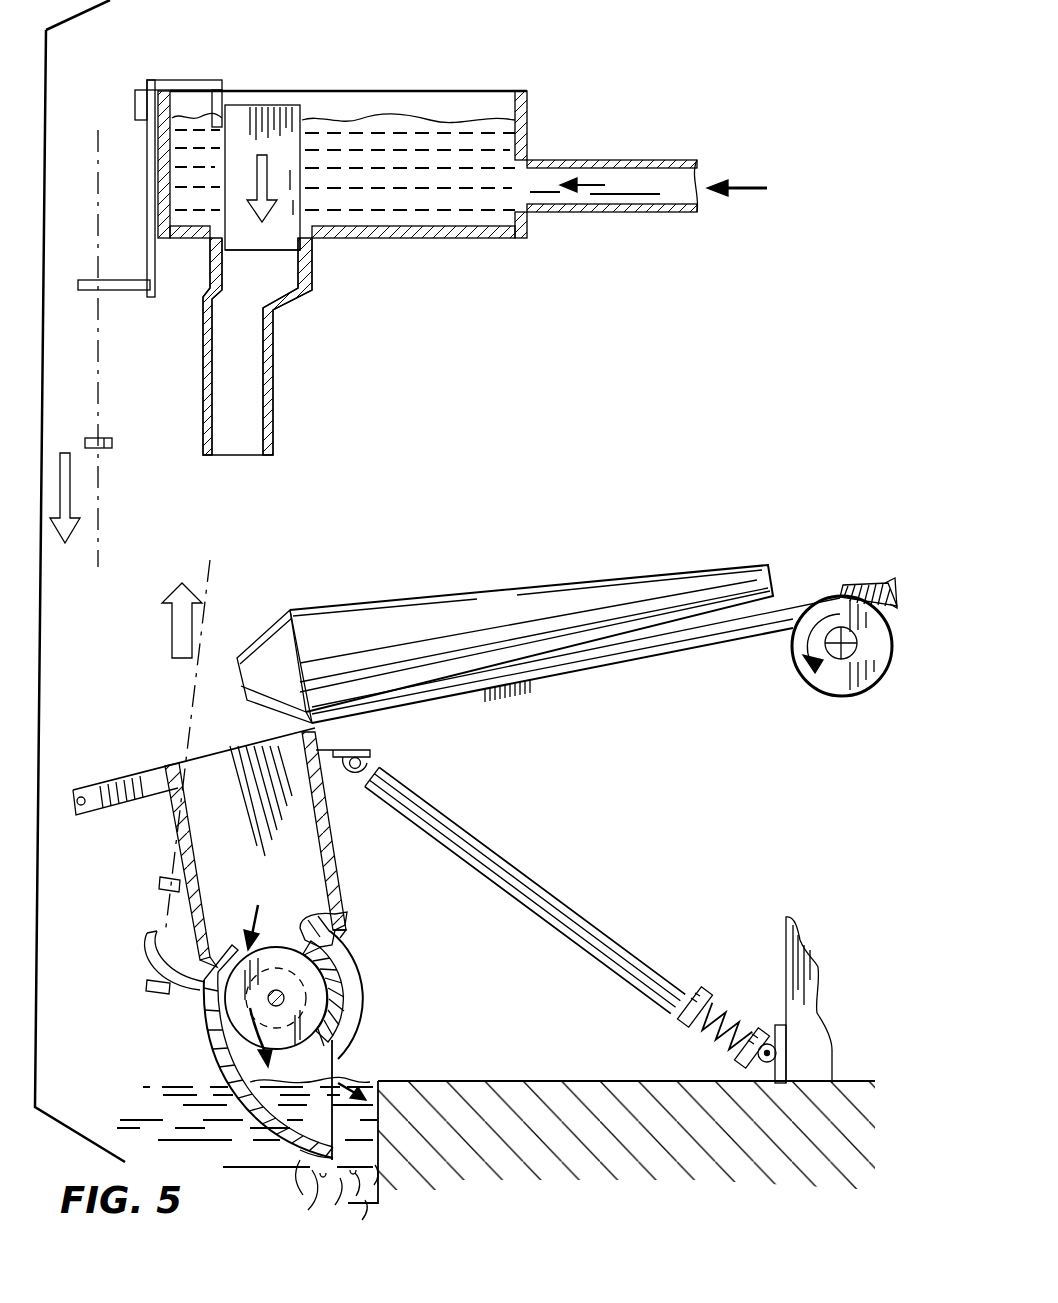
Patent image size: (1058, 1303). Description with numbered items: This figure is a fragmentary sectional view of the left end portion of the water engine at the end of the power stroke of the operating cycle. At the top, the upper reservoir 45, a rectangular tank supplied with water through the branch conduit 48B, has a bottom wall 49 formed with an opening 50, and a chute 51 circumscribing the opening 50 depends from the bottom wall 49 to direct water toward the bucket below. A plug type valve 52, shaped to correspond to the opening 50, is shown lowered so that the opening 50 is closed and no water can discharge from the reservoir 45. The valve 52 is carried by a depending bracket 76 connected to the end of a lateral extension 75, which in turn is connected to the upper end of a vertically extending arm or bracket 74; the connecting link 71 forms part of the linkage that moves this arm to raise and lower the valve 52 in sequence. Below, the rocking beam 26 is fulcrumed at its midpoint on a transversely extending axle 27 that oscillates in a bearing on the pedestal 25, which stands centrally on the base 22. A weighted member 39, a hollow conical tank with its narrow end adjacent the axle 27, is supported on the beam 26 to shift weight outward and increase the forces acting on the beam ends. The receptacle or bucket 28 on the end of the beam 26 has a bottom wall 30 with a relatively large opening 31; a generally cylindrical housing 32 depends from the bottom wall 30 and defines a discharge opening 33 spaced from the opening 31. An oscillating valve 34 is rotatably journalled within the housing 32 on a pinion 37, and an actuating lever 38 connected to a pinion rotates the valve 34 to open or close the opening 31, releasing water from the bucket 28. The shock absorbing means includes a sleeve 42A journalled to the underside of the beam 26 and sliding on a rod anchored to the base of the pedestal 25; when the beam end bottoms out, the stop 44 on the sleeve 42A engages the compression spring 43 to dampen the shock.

The base 22 is at (442, 1083).
The pedestal 25 is at (815, 1043).
The rocking beam 26 is at (586, 680).
The axle 27 is at (836, 634).
The receptacle or bucket 28 is at (312, 886).
The bottom wall 30 is at (226, 940).
The opening 31 is at (313, 917).
The cylindrical housing 32 is at (204, 1022).
The discharge opening 33 is at (290, 1150).
The oscillating valve 34 is at (346, 1041).
The pinion 37 is at (343, 997).
The actuating lever 38 is at (148, 946).
The weighted member 39 is at (488, 605).
The sleeve 42A is at (615, 928).
The compression spring 43 is at (703, 1030).
The stop 44 is at (697, 982).
The upper reservoir 45 is at (383, 78).
The branch conduit 48B is at (606, 157).
The bottom wall 49 is at (433, 240).
The opening 50 is at (295, 243).
The chute 51 is at (275, 360).
The valve 52 is at (289, 118).
The connecting link 71 is at (124, 292).
The arm or bracket 74 is at (147, 152).
The lateral extension 75 is at (191, 80).
The depending bracket 76 is at (217, 98).